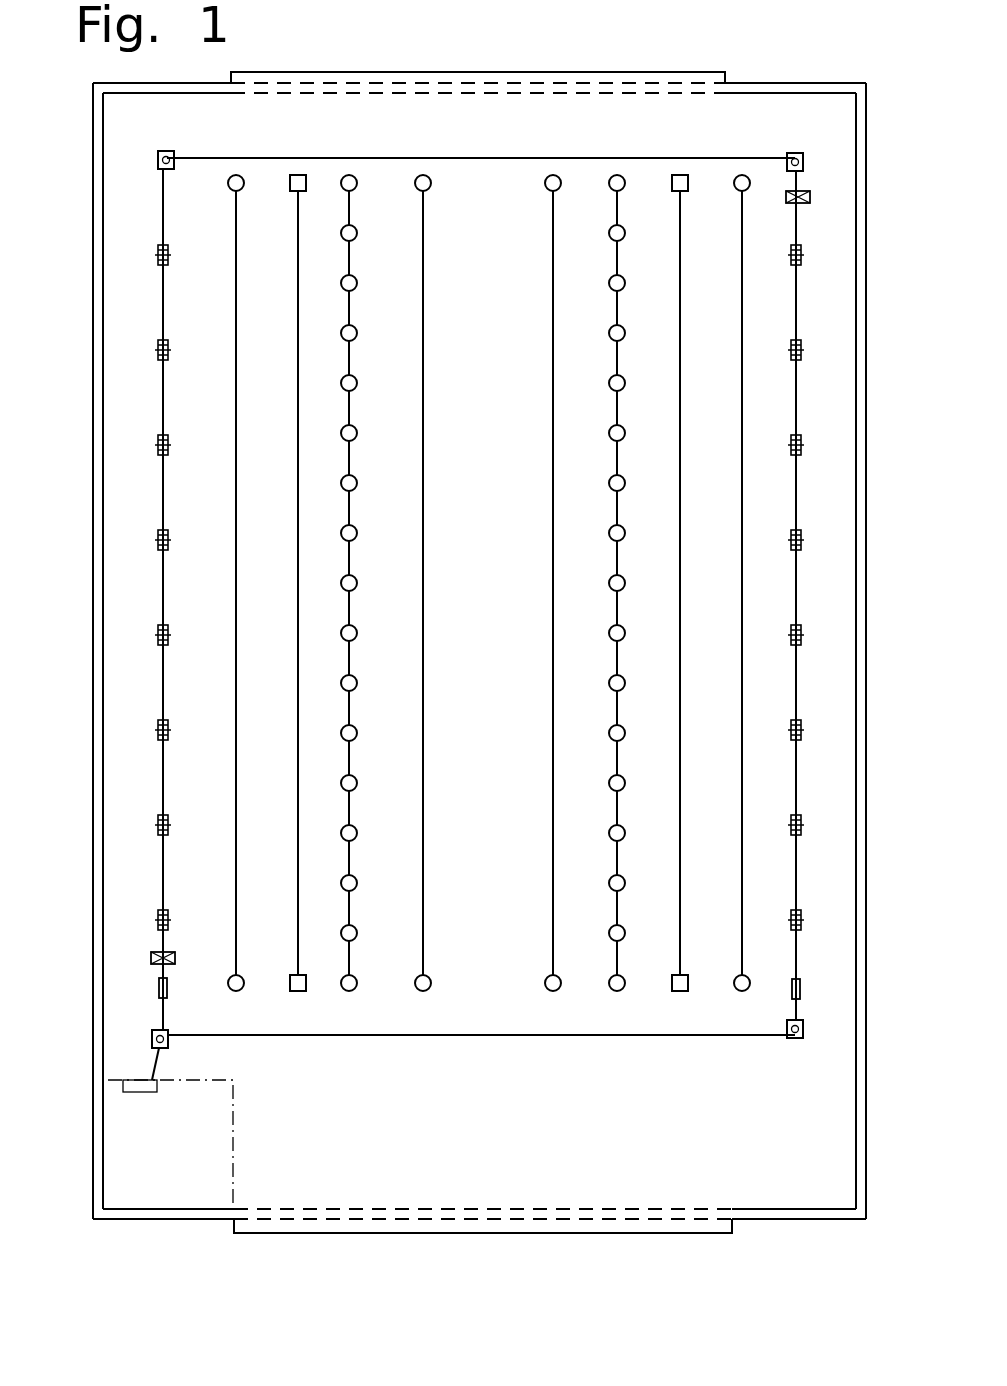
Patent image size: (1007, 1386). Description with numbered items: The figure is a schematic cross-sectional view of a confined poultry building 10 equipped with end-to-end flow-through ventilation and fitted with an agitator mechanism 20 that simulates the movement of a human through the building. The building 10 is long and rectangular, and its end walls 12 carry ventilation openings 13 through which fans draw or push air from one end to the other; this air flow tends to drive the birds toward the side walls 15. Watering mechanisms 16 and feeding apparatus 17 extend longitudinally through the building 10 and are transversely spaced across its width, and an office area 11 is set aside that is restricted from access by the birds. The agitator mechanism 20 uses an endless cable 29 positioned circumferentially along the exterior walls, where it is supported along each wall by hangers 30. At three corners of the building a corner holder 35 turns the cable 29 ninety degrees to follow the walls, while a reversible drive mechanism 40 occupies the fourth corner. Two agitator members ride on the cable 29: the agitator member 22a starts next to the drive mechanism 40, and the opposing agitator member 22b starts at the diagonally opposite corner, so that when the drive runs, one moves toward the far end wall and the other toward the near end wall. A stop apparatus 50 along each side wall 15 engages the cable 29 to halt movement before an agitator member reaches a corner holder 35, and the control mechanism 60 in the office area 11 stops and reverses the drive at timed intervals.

The poultry building 10 is at (580, 48).
The office area 11 is at (235, 1165).
The end wall 12 is at (795, 82).
The ventilation opening 13 is at (316, 62).
The side wall 15 is at (868, 128).
The watering mechanism 16 is at (553, 503).
The feeding apparatus 17 is at (296, 530).
The agitator mechanism 20 is at (489, 1082).
The agitator member 22a is at (151, 958).
The opposing agitator member 22b is at (786, 197).
The cable 29 is at (513, 159).
The hanger 30 is at (169, 542).
The corner holder 35 is at (172, 152).
The drive mechanism 40 is at (170, 1042).
The stop apparatus 50 is at (168, 987).
The control mechanism 60 is at (135, 1095).